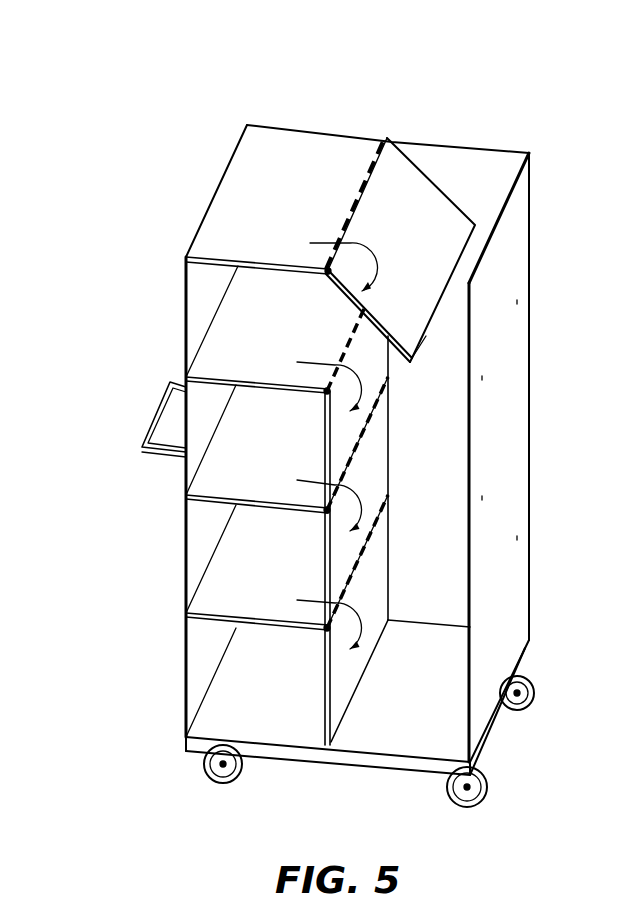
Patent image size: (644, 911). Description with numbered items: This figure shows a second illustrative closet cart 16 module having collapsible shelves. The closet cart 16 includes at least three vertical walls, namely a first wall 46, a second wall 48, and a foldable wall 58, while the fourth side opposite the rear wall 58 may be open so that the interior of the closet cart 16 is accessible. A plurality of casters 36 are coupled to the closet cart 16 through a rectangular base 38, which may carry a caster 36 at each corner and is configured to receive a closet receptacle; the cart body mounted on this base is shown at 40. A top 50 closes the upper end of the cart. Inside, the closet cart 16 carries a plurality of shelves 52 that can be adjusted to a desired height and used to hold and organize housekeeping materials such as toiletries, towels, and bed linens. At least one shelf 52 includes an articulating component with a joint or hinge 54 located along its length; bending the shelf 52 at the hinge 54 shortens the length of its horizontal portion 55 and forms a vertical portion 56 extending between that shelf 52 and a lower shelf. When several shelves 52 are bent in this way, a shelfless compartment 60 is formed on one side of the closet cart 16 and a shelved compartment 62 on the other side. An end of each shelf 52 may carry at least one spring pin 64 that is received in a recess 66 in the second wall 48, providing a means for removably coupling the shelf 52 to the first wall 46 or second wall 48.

The closet cart 16 is at (217, 102).
The casters 36 is at (203, 770).
The rectangular base 38 is at (333, 767).
The cabinet housing 40 is at (155, 670).
The first wall 46 is at (187, 543).
The second wall 48 is at (518, 625).
The top wall 50 is at (453, 145).
The shelves 52 is at (252, 298).
The hinge 54 is at (387, 138).
The horizontal portion 55 is at (453, 232).
The vertical portion 56 is at (210, 365).
The foldable wall 58 is at (313, 430).
The shelfless compartment 60 is at (413, 420).
The shelved compartment 62 is at (305, 462).
The spring pin 64 is at (428, 337).
The recess 66 is at (517, 420).